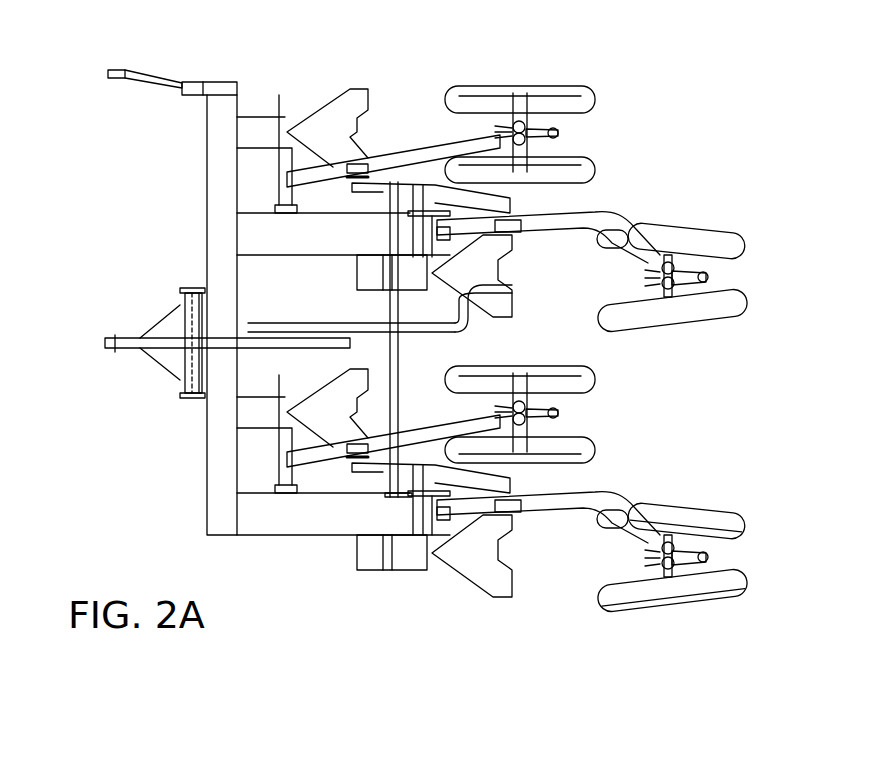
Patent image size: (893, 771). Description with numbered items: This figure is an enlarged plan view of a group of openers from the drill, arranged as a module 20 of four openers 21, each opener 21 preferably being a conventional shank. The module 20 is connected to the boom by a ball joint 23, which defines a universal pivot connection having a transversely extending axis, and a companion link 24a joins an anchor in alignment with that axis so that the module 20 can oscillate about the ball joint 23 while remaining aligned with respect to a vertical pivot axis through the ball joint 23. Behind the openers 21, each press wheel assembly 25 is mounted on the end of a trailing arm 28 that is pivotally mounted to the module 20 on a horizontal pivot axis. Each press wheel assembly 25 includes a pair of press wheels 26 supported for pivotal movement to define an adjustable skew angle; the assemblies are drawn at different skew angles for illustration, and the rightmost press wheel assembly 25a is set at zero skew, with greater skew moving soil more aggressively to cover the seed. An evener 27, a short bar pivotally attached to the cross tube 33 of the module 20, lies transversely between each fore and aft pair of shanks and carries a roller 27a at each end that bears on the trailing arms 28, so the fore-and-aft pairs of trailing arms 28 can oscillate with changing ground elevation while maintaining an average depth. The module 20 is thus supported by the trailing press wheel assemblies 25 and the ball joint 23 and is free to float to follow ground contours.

The module 20 is at (110, 447).
The opener 21 is at (500, 590).
The ball joint 23 is at (110, 338).
The companion link 24a is at (158, 77).
The press wheel assembly 25 is at (771, 212).
The rightmost press wheel assembly 25a is at (555, 86).
The press wheel 26 is at (688, 237).
The evener 27 is at (475, 492).
The roller 27a is at (348, 455).
The trailing arm 28 is at (443, 435).
The cross tube 33 is at (395, 340).